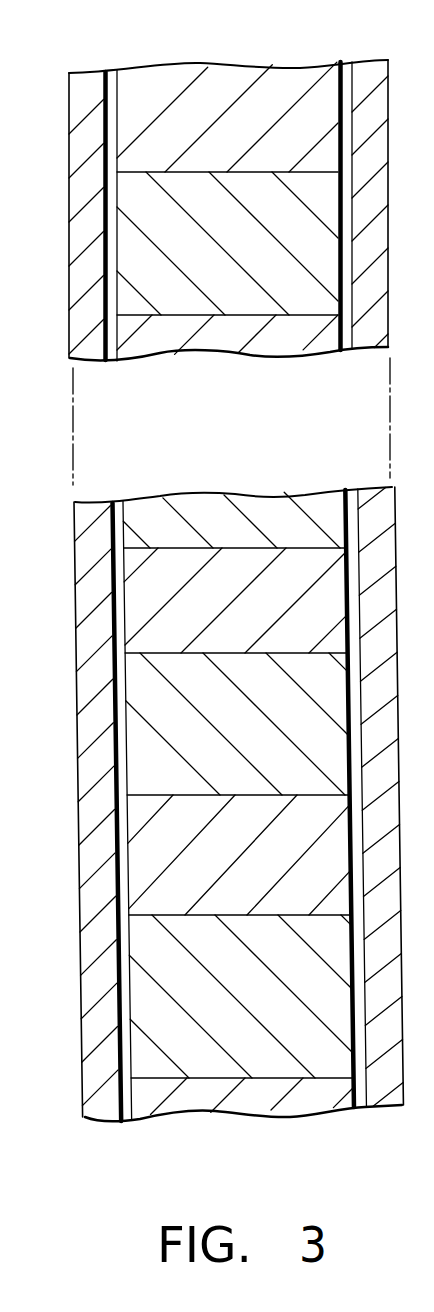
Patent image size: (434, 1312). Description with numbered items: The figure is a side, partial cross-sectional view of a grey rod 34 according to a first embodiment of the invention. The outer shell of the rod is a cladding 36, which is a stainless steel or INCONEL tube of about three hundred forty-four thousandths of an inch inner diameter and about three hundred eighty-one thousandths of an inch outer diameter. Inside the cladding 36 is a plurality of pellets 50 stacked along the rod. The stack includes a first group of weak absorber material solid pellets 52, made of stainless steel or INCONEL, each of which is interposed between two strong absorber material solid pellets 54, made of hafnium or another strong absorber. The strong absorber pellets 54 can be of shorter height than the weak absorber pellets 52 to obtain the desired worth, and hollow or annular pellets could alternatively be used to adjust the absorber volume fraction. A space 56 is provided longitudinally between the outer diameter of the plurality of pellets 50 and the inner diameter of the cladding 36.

The grey rod 34 is at (232, 39).
The cladding 36 is at (85, 236).
The plurality of pellets 50 is at (58, 547).
The weak absorber material solid pellets 52 is at (245, 293).
The strong absorber material solid pellets 54 is at (278, 88).
The space 56 is at (125, 840).